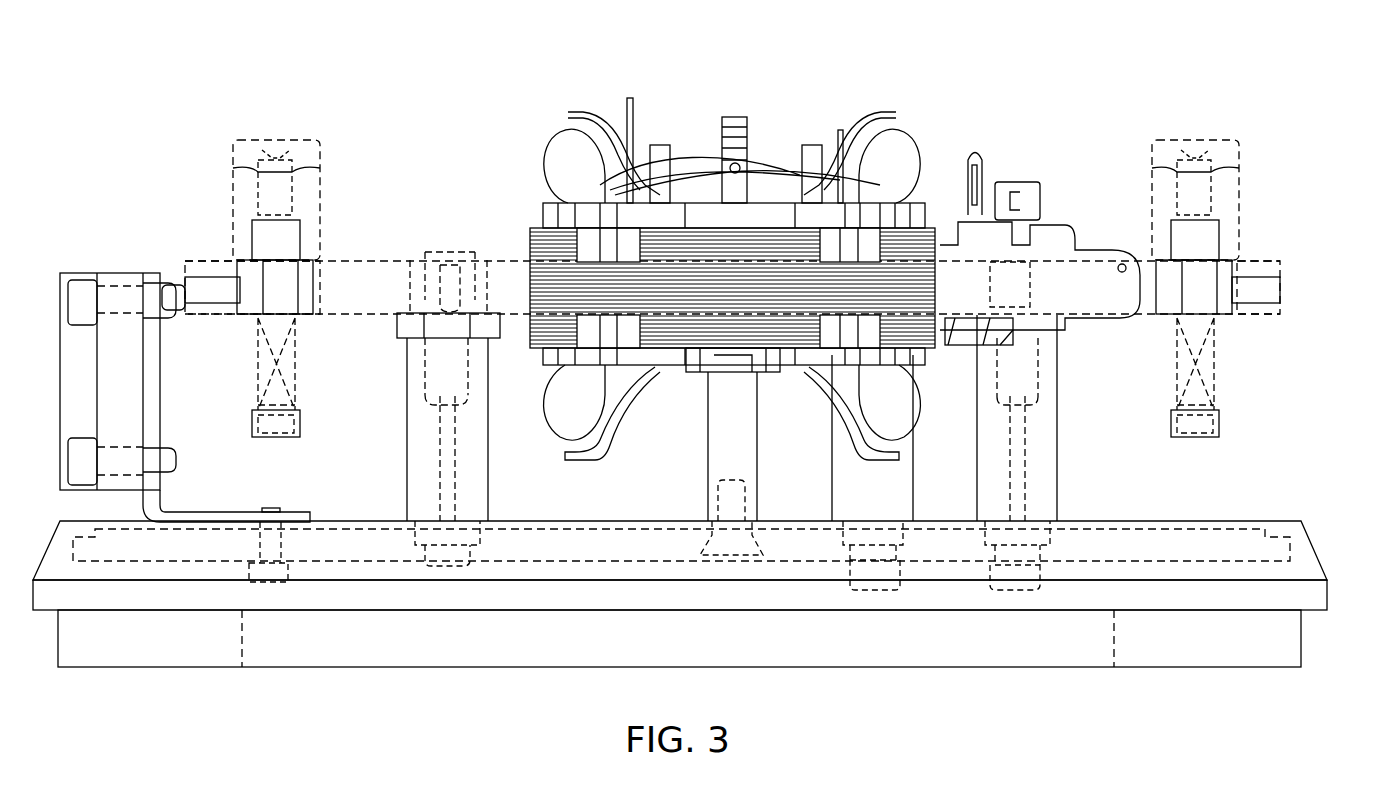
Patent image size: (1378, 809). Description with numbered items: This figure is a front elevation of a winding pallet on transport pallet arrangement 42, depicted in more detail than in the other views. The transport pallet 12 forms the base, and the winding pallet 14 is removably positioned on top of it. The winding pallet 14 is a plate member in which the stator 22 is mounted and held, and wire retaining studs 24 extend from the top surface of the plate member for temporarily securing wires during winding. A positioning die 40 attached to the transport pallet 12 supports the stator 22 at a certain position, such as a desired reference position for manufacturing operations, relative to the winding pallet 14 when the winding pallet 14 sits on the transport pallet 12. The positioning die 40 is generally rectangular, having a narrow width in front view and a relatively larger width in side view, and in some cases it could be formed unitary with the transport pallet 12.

The transport pallet 12 is at (1284, 519).
The winding pallet 14 is at (1284, 268).
The stator 22 is at (549, 124).
The wire retaining studs 24 is at (235, 136).
The positioning die 40 is at (708, 430).
The winding pallet on transport pallet arrangement 42 is at (1075, 119).